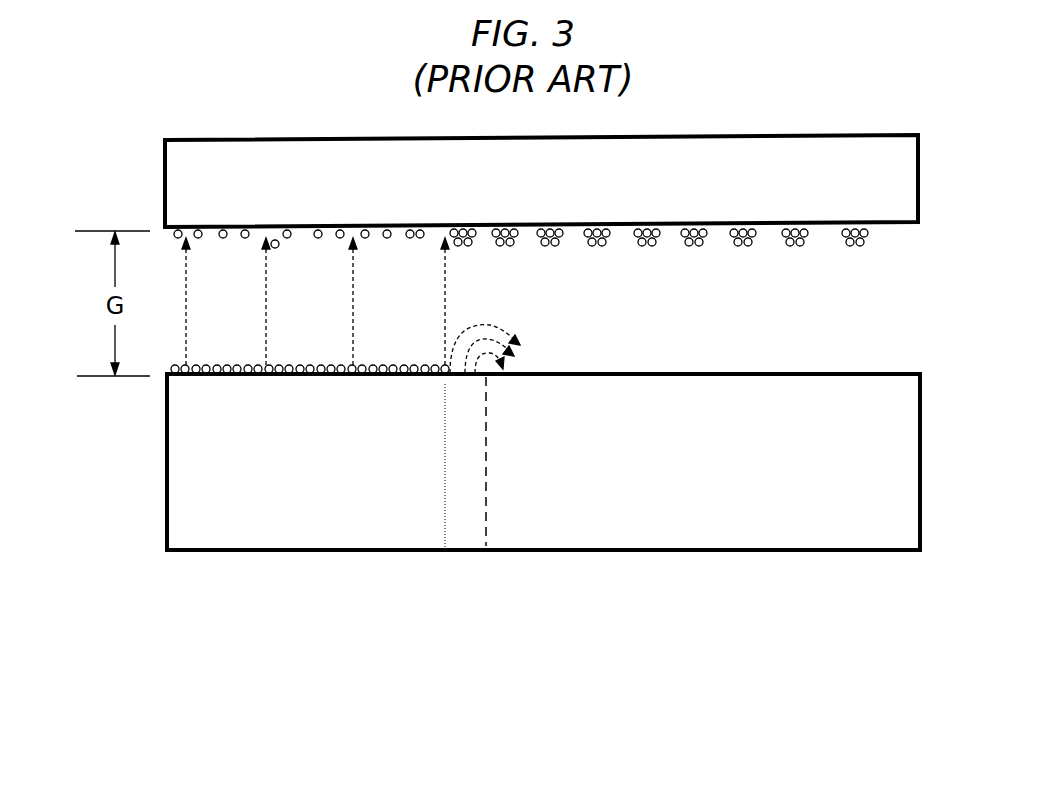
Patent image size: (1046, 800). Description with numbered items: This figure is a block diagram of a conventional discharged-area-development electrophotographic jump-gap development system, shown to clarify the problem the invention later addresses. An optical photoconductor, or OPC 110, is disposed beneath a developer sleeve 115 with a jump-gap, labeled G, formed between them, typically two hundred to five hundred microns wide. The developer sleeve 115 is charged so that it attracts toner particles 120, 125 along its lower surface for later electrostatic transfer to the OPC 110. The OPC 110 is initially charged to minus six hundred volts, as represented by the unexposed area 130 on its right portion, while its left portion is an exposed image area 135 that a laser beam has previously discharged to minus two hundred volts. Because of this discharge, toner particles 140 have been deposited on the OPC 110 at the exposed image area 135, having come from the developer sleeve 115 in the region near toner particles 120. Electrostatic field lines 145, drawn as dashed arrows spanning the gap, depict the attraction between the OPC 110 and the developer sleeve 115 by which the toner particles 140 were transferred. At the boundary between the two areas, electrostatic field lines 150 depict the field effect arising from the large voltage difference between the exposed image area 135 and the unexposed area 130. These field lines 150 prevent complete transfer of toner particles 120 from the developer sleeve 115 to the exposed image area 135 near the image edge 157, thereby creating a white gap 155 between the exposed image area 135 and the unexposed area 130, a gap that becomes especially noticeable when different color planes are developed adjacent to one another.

The optical photoconductor (OPC) 110 is at (293, 562).
The developer sleeve 115 is at (234, 130).
The toner particles 120 is at (287, 238).
The toner particles 125 is at (508, 246).
The unexposed area 130 is at (650, 385).
The exposed image area 135 is at (227, 494).
The toner particles 140 is at (282, 364).
The electrostatic field lines 145 is at (266, 308).
The electrostatic field lines 150 is at (480, 324).
The white gap 155 is at (470, 538).
The image edge 157 is at (487, 527).